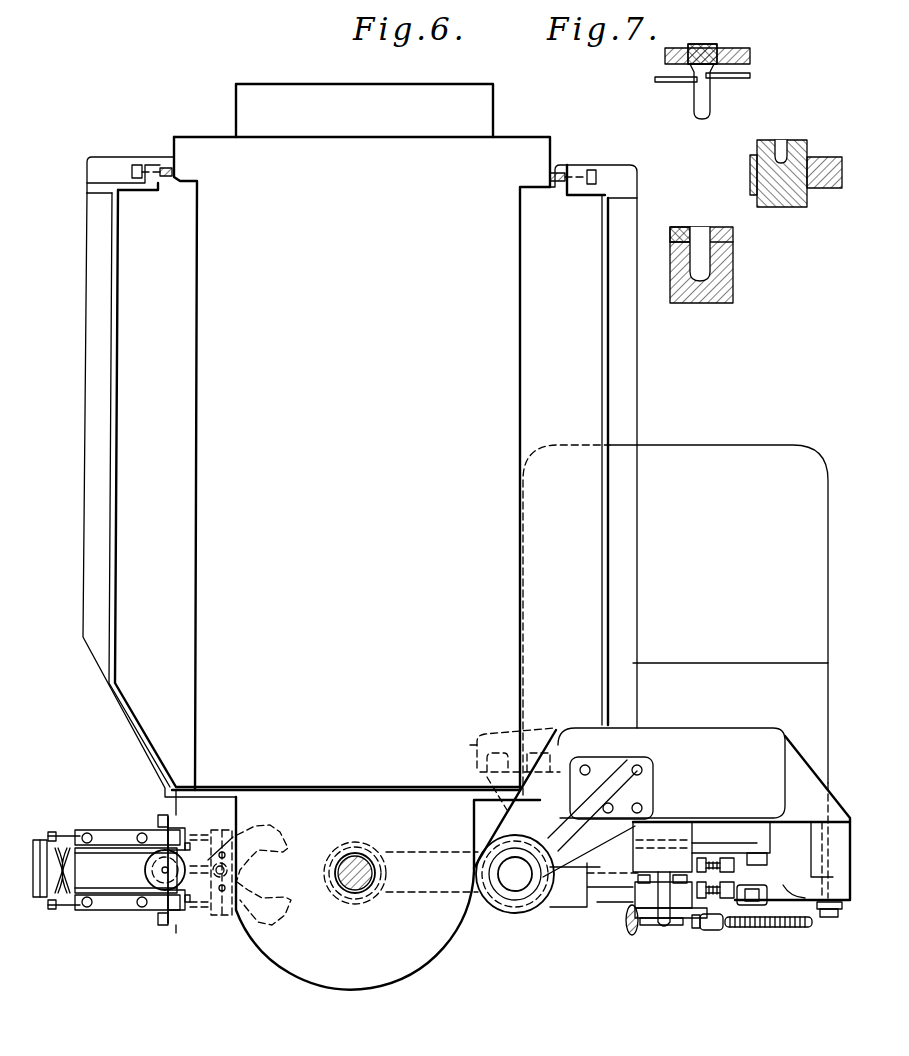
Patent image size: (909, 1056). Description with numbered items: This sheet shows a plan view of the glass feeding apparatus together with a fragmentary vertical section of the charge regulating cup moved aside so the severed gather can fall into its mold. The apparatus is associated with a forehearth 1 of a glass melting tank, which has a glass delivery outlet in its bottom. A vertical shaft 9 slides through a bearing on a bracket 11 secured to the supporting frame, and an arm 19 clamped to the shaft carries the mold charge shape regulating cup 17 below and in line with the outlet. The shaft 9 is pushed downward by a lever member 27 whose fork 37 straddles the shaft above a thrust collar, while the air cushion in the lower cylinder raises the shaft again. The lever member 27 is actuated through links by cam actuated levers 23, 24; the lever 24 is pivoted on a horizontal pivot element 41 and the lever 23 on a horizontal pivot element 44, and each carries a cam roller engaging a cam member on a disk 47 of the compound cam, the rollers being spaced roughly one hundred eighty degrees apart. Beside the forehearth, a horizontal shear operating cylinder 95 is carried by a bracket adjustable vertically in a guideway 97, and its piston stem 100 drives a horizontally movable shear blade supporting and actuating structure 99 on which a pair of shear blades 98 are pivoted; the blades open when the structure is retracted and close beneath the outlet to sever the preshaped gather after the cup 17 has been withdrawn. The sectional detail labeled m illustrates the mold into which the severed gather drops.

In FIG. 6, the forehearth 1 is at (203, 738).
In FIG. 6, the vertical shaft 9 is at (514, 882).
In FIG. 6, the bracket 11 is at (645, 782).
In FIG. 7, the mold charge shape regulating cup 17 is at (793, 207).
In FIG. 7, the arm 19 is at (824, 158).
In FIG. 6, the cam actuated lever 23 is at (783, 897).
In FIG. 6, the cam actuated lever 24 is at (703, 845).
In FIG. 6, the lever member 27 is at (641, 882).
In FIG. 6, the fork 37 is at (580, 900).
In FIG. 6, the horizontal pivot element 41 is at (762, 863).
In FIG. 6, the horizontal pivot element 44 is at (833, 918).
In FIG. 6, the disk 47 is at (607, 880).
In FIG. 6, the shear operating cylinder 95 is at (62, 898).
In FIG. 6, the guideway 97 is at (178, 832).
In FIG. 6, the shear blades 98 is at (240, 922).
In FIG. 7, the shear blades 98 is at (677, 82).
In FIG. 6, the shear blade supporting and actuating structure 99 is at (223, 915).
In FIG. 6, the piston stem 100 is at (191, 878).
In FIG. 7, the mold block m is at (729, 280).